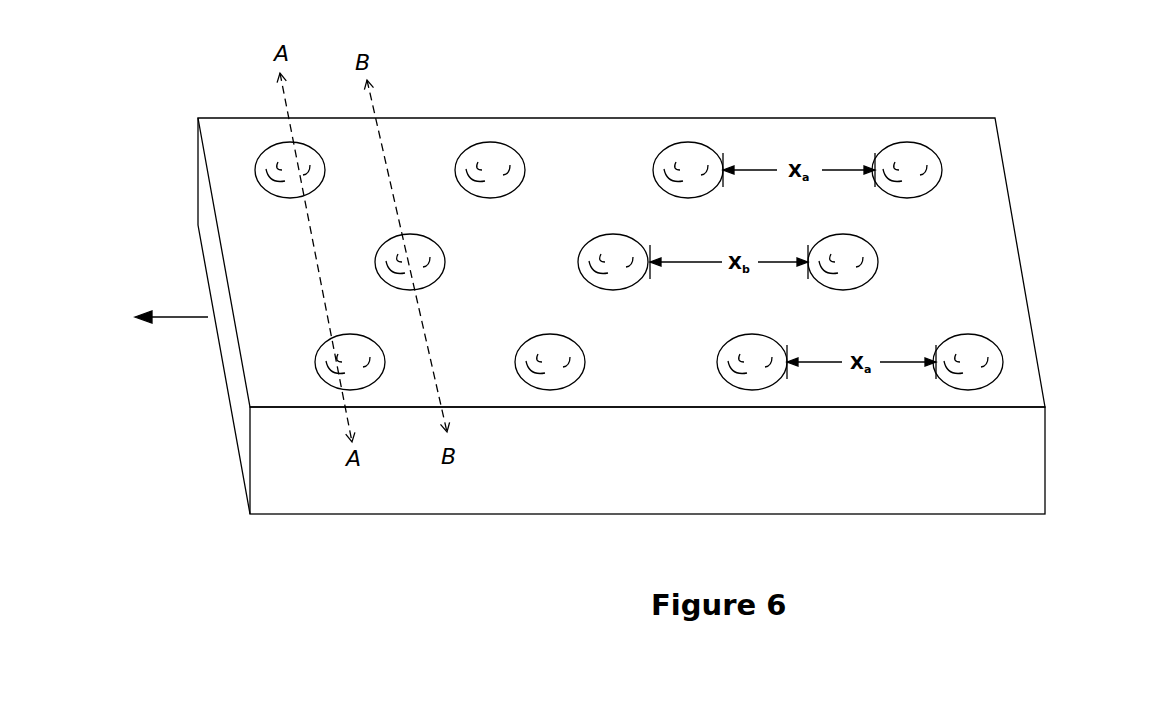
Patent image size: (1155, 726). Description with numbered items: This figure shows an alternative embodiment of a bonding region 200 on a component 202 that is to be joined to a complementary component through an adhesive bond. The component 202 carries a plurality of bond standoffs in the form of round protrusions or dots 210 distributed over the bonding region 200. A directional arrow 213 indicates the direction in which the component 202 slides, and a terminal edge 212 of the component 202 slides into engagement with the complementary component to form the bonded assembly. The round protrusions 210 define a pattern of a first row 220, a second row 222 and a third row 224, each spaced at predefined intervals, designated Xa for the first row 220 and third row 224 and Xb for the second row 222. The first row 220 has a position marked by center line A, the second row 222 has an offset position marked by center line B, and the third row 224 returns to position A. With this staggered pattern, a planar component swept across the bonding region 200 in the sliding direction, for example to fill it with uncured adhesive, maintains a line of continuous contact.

The bonding region 200 is at (628, 292).
The component 202 is at (1037, 454).
The round protrusions 210 is at (699, 223).
The terminal edge 212 is at (240, 358).
The directional arrow 213 is at (177, 317).
The first row 220 is at (1045, 405).
The second row 222 is at (1028, 310).
The third row 224 is at (1011, 212).